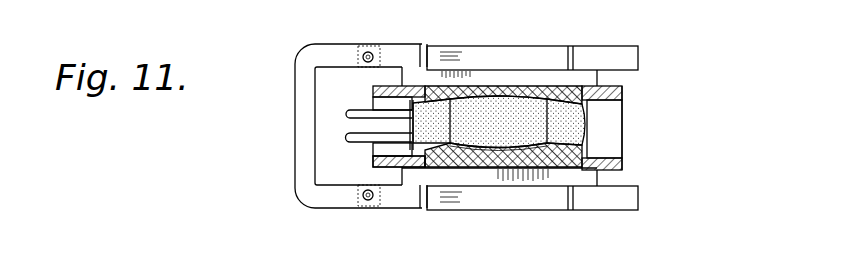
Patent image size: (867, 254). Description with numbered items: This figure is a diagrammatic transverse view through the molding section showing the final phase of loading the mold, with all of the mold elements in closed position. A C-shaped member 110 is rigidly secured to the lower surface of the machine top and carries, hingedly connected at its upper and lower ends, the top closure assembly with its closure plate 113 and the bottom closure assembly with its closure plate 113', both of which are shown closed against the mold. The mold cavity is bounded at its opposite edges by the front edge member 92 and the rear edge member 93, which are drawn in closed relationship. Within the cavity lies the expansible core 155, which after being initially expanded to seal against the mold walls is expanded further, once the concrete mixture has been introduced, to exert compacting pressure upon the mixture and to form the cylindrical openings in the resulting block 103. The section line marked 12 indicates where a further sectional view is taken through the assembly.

The C-shaped member 110 is at (296, 90).
The closure plate 113 is at (531, 44).
The closure plate 113' is at (469, 123).
The rear edge member 93 is at (388, 82).
The core 155 is at (543, 97).
The front edge member 92 is at (623, 97).
The block 103 is at (460, 167).
The section line 12- 12 is at (498, 12).